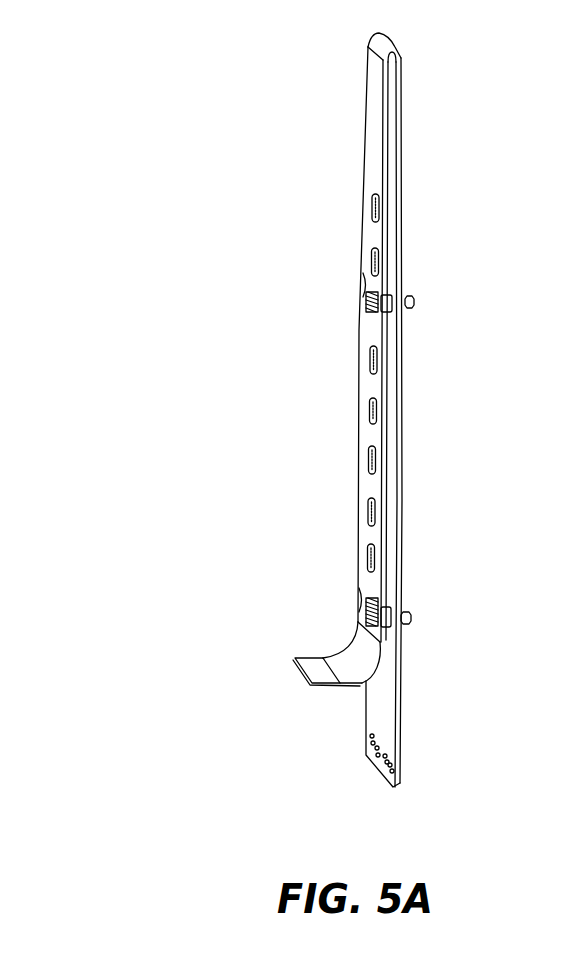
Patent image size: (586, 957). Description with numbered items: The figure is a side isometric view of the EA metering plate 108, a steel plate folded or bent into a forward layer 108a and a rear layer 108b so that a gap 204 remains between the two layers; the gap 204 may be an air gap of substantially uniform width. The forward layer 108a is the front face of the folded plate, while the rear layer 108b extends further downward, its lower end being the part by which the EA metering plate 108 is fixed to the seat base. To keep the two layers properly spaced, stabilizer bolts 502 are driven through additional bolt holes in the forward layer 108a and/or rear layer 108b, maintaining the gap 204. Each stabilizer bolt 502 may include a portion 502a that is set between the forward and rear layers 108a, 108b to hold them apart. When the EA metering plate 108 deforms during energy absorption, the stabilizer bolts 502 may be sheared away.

The EA metering plate 108 is at (146, 47).
The gap 204 is at (394, 459).
The forward layer 108a is at (373, 460).
The rear layer 108b is at (399, 725).
The stabilizer bolts 502 is at (415, 298).
The portion of stabilizer bolt 502a is at (392, 300).